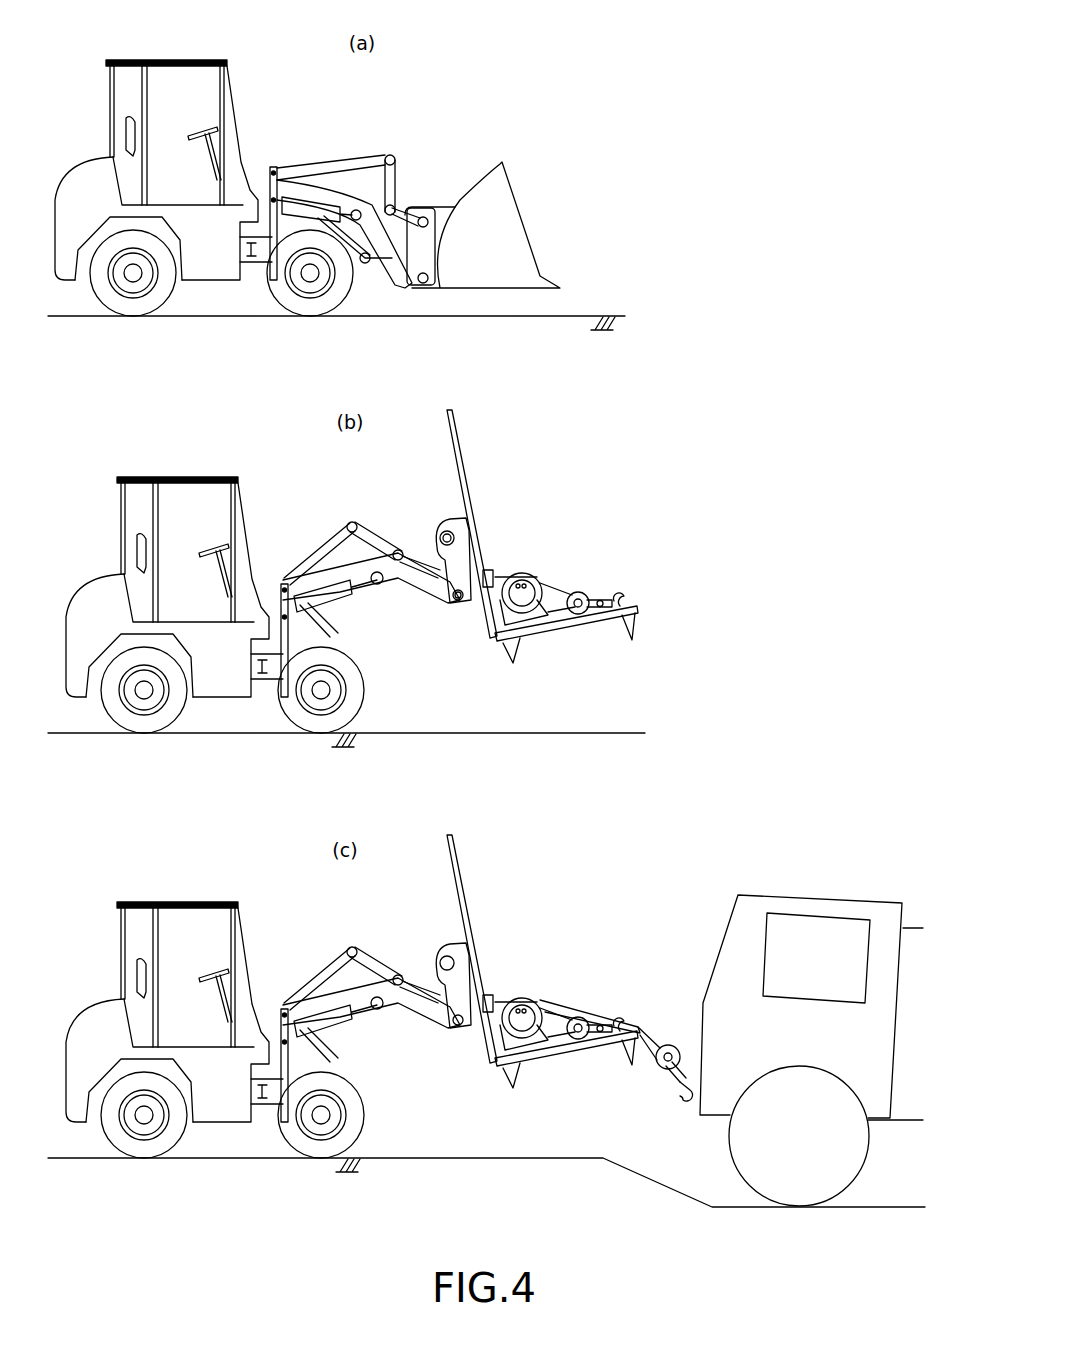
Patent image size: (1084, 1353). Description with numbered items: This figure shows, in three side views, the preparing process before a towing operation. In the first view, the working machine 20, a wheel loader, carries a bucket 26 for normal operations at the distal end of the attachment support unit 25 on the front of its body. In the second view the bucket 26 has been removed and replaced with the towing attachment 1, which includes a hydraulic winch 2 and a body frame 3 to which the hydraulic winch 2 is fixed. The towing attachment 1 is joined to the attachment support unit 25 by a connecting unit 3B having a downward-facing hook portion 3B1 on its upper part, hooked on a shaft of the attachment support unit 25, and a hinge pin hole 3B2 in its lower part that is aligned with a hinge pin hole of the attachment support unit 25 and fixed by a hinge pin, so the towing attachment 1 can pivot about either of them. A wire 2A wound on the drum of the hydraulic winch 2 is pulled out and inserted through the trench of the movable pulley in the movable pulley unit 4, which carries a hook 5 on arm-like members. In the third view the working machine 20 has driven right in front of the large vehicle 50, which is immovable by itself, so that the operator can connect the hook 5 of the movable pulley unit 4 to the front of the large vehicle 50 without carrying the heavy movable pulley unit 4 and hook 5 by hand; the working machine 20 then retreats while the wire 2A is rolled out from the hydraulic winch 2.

The towing attachment 1 is at (507, 470).
The hydraulic winch 2 is at (539, 569).
The wire 2A is at (600, 1017).
The body frame 3 is at (460, 437).
The connecting unit 3B is at (448, 518).
The hook portion 3B1 is at (436, 516).
The hinge pin hole 3B2 is at (463, 606).
The movable pulley unit 4 is at (667, 1047).
The hook 5 is at (688, 1110).
The working machine 20 is at (307, 604).
The attachment support unit 25 is at (265, 143).
The bucket 26 is at (500, 232).
The large vehicle 50 is at (828, 889).